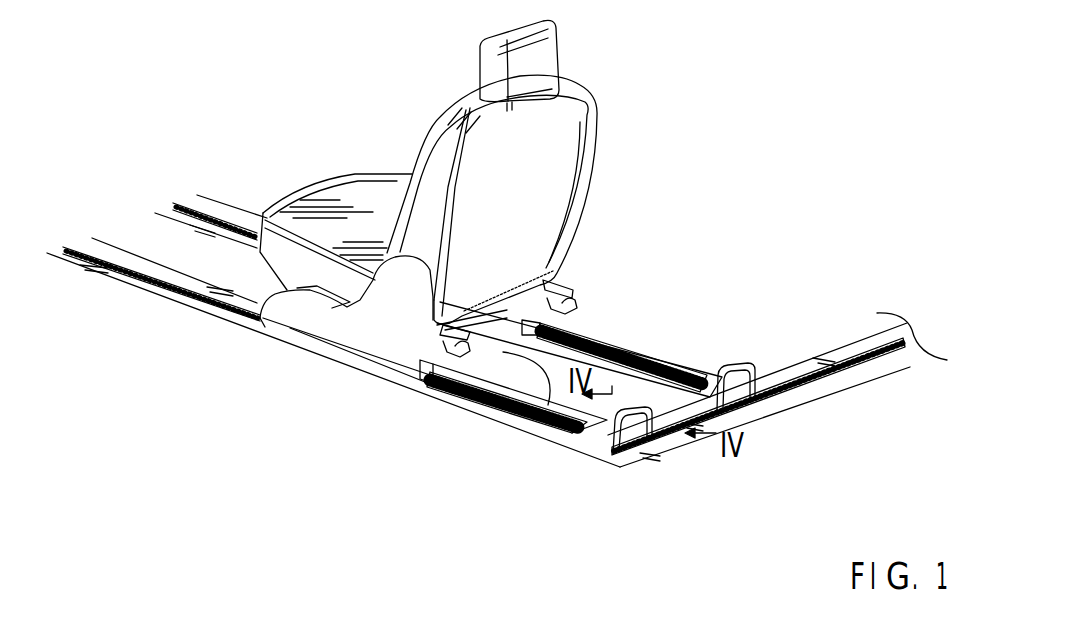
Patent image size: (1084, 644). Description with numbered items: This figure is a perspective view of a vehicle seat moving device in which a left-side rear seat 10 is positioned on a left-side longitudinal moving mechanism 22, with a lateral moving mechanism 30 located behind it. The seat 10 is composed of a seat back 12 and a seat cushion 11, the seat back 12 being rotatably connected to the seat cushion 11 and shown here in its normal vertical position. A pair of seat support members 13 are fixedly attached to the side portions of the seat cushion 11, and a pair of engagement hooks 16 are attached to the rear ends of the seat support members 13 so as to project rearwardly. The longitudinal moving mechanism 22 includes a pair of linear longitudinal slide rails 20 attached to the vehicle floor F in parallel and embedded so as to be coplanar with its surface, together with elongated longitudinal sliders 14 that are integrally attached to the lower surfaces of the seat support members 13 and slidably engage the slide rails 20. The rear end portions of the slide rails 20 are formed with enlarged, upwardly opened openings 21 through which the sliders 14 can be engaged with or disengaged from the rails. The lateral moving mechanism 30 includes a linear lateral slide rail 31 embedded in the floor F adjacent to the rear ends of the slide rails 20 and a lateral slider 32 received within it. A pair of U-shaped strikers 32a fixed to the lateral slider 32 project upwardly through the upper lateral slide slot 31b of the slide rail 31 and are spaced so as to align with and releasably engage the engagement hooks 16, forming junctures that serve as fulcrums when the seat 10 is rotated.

The left-side rear seat 10 is at (420, 111).
The seat cushion 11 is at (348, 204).
The seat back 12 is at (585, 112).
The seat support members 13 is at (384, 330).
The longitudinal sliders 14 is at (303, 337).
The engagement hooks 16 is at (490, 372).
The longitudinal slide rails 20 is at (155, 205).
The enlarged openings 21 is at (632, 357).
The left-side longitudinal moving mechanism 22 is at (210, 330).
The lateral moving mechanism 30 is at (774, 362).
The lateral slide rail 31 is at (807, 393).
The upper lateral slide slot 31b is at (867, 363).
The U-shaped strikers 32a is at (743, 410).
The lateral slider 32 is at (684, 408).
The vehicle floor F is at (668, 259).